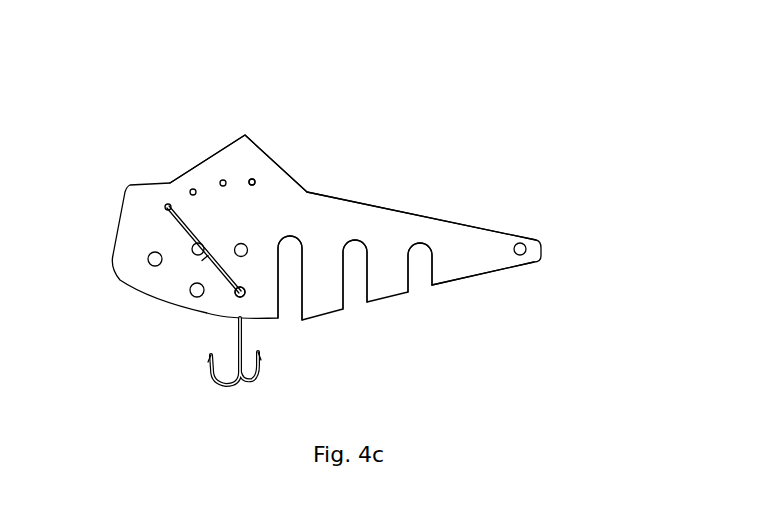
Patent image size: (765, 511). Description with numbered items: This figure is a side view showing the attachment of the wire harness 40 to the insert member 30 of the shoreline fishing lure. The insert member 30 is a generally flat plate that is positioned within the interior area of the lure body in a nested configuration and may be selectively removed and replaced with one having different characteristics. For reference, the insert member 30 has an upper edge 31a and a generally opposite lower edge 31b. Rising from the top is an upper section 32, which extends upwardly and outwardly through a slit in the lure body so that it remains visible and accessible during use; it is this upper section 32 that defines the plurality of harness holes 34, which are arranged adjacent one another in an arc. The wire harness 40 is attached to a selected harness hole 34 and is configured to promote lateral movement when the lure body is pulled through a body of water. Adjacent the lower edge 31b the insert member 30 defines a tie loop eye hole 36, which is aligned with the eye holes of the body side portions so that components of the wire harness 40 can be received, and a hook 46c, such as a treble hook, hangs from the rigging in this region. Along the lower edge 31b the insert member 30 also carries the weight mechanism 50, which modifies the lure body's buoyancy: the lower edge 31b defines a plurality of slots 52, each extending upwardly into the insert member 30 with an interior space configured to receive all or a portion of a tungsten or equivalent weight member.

The insert member 30 is at (398, 146).
The upper edge 31a is at (435, 218).
The lower edge 31b is at (497, 273).
The upper section 32 is at (245, 155).
The harness holes 34 is at (257, 177).
The tie loop eye hole 36 is at (233, 297).
The wire harness 40 is at (137, 233).
The hook 46c is at (223, 387).
The weight mechanism 50 is at (348, 351).
The slots 52 is at (423, 285).